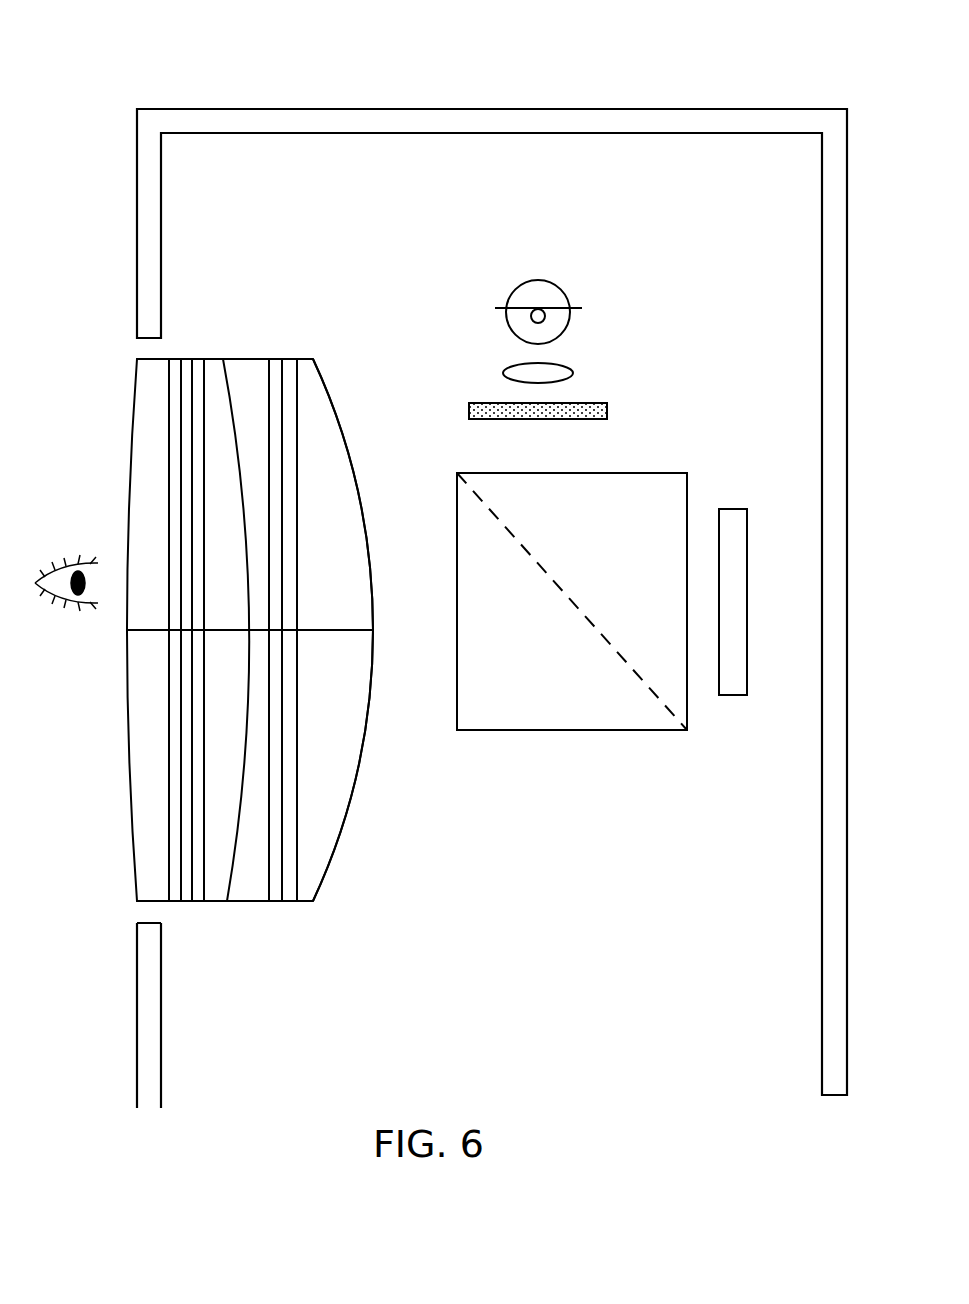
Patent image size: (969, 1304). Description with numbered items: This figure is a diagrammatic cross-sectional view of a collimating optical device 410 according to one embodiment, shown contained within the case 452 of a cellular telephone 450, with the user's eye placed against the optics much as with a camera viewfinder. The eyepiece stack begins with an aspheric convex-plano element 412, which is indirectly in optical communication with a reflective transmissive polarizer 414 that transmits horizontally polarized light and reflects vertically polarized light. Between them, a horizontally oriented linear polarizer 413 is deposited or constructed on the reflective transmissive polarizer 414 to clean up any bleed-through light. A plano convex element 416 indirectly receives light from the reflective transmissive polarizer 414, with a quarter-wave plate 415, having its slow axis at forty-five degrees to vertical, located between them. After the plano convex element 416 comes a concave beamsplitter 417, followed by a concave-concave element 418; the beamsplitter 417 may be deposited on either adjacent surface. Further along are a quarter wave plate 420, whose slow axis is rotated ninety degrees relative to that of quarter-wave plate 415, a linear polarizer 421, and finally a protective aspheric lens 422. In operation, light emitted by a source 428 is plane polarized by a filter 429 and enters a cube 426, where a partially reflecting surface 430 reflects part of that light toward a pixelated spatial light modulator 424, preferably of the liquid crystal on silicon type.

The device 410 is at (307, 629).
The aspheric convex-plano element 412 is at (139, 452).
The linear polarizer 413 is at (173, 364).
The reflective transmissive polarizer 414 is at (188, 367).
The quarter-wave plate 415 is at (197, 895).
The plano convex element 416 is at (215, 368).
The concave beamsplitter 417 is at (240, 850).
The concave-concave element 418 is at (255, 892).
The quarter wave plate 420 is at (273, 367).
The linear polarizer 421 is at (290, 895).
The protective aspheric lens 422 is at (343, 457).
The pixelated spatial light modulator (SLM) 424 is at (733, 516).
The cube 426 is at (572, 632).
The source 428 is at (556, 296).
The filter 429 is at (607, 412).
The partially reflecting surface 430 is at (573, 597).
The cellular telephone 450 is at (459, 563).
The case 452 is at (146, 218).